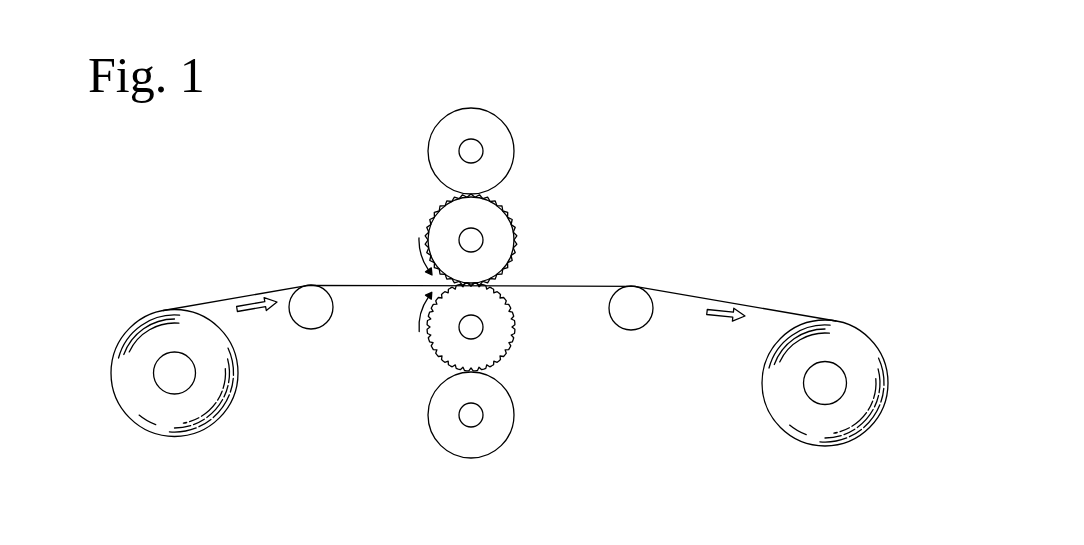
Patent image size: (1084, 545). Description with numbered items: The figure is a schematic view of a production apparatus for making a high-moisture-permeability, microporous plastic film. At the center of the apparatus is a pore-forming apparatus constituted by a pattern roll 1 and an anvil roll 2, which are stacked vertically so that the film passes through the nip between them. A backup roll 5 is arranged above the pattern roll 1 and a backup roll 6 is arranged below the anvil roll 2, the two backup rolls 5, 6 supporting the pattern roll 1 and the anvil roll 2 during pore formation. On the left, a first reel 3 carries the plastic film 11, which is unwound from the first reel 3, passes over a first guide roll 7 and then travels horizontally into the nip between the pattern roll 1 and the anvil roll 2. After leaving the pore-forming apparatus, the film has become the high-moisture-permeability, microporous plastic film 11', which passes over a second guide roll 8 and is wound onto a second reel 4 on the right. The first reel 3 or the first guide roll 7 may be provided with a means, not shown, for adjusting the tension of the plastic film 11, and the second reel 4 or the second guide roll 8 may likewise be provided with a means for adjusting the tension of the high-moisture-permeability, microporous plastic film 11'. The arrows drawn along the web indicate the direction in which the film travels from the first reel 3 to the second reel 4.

The pattern roll 1 is at (498, 217).
The anvil roll 2 is at (507, 330).
The first reel 3 is at (172, 373).
The second reel 4 is at (830, 380).
The backup roll 5 is at (500, 133).
The backup roll 6 is at (505, 413).
The first guide roll 7 is at (314, 320).
The second guide roll 8 is at (633, 320).
The plastic film 11 is at (499, 357).
The high-moisture-permeability, microporous plastic film 11' is at (727, 285).